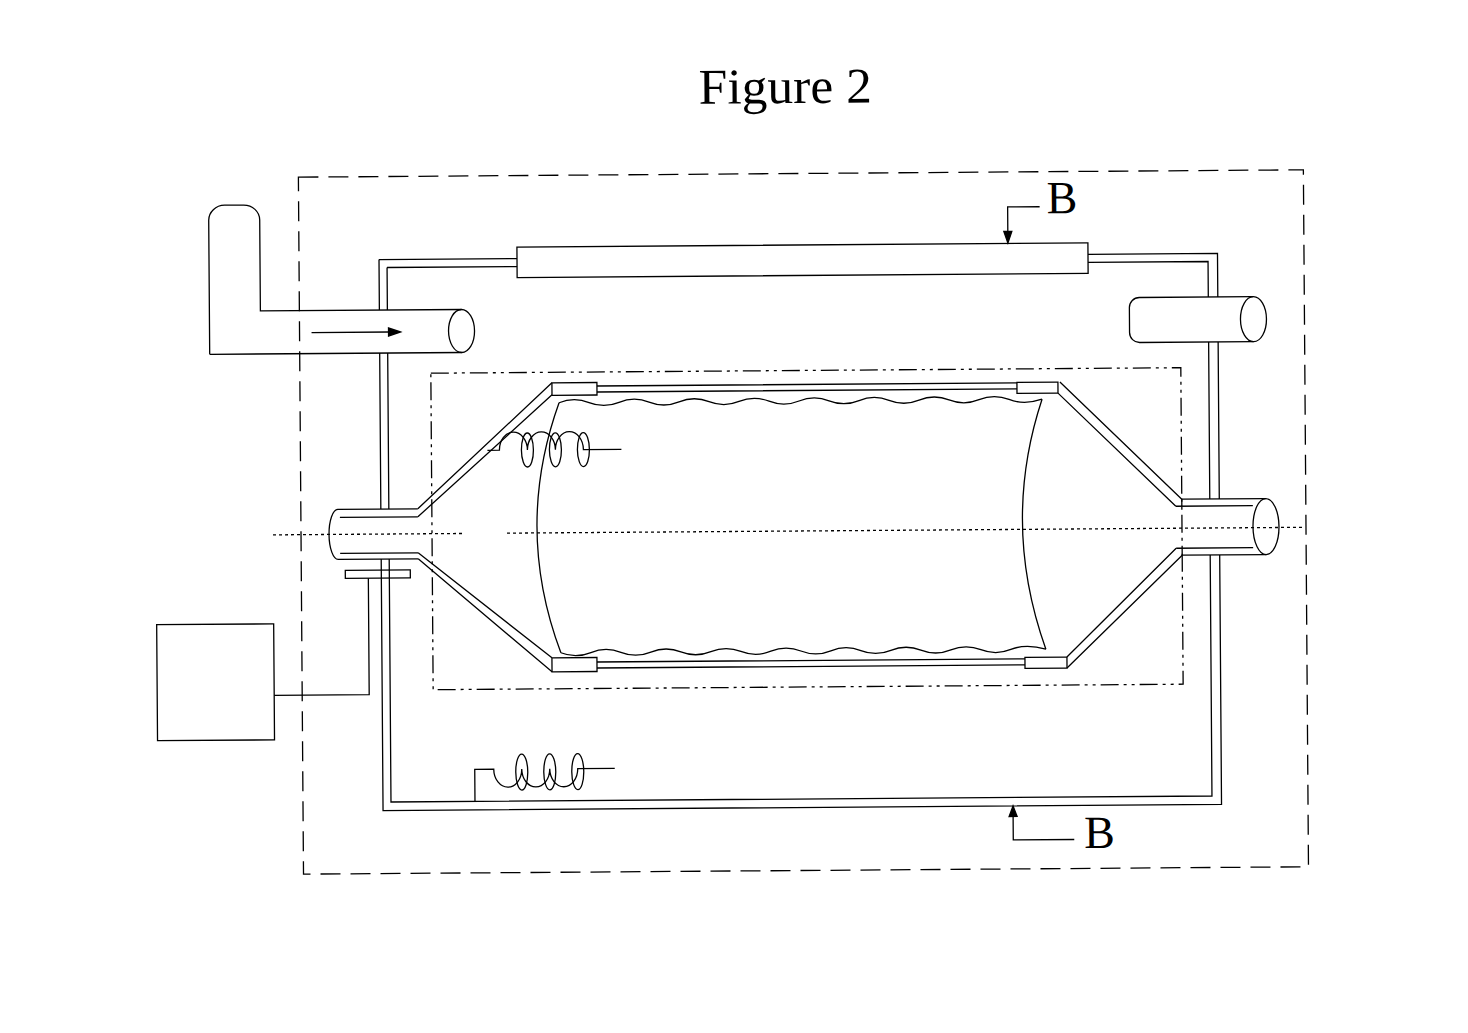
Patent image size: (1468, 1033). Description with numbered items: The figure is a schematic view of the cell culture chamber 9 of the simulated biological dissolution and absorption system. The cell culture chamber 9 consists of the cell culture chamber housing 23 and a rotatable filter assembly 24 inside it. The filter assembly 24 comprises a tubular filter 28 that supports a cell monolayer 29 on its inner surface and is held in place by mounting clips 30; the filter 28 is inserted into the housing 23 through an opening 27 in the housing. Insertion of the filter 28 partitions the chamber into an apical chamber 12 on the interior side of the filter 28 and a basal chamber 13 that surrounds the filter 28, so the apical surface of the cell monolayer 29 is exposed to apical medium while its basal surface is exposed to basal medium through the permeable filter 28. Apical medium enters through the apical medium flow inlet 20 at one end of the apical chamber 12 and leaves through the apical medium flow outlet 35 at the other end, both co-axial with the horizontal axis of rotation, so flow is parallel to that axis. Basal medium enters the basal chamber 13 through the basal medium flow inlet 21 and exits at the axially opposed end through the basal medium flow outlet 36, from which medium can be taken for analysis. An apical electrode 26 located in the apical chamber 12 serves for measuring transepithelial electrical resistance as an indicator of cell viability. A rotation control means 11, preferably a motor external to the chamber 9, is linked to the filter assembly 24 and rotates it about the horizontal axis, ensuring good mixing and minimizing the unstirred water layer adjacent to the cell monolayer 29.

The cell culture chamber 9 is at (1011, 870).
The rotation control means 11 is at (283, 655).
The apical chamber 12 is at (855, 577).
The basal chamber 13 is at (837, 308).
The apical medium flow inlet 20 is at (311, 542).
The basal medium flow inlet 21 is at (234, 181).
The cell culture chamber housing 23 is at (613, 832).
The filter assembly 24 is at (808, 687).
The apical electrode 26 is at (608, 459).
The opening 27 is at (585, 246).
The filter 28 is at (671, 379).
The cell monolayer 29 is at (760, 423).
The mounting clips 30 is at (1024, 384).
The apical medium flow outlet 35 is at (1262, 519).
The basal medium flow outlet 36 is at (1255, 320).